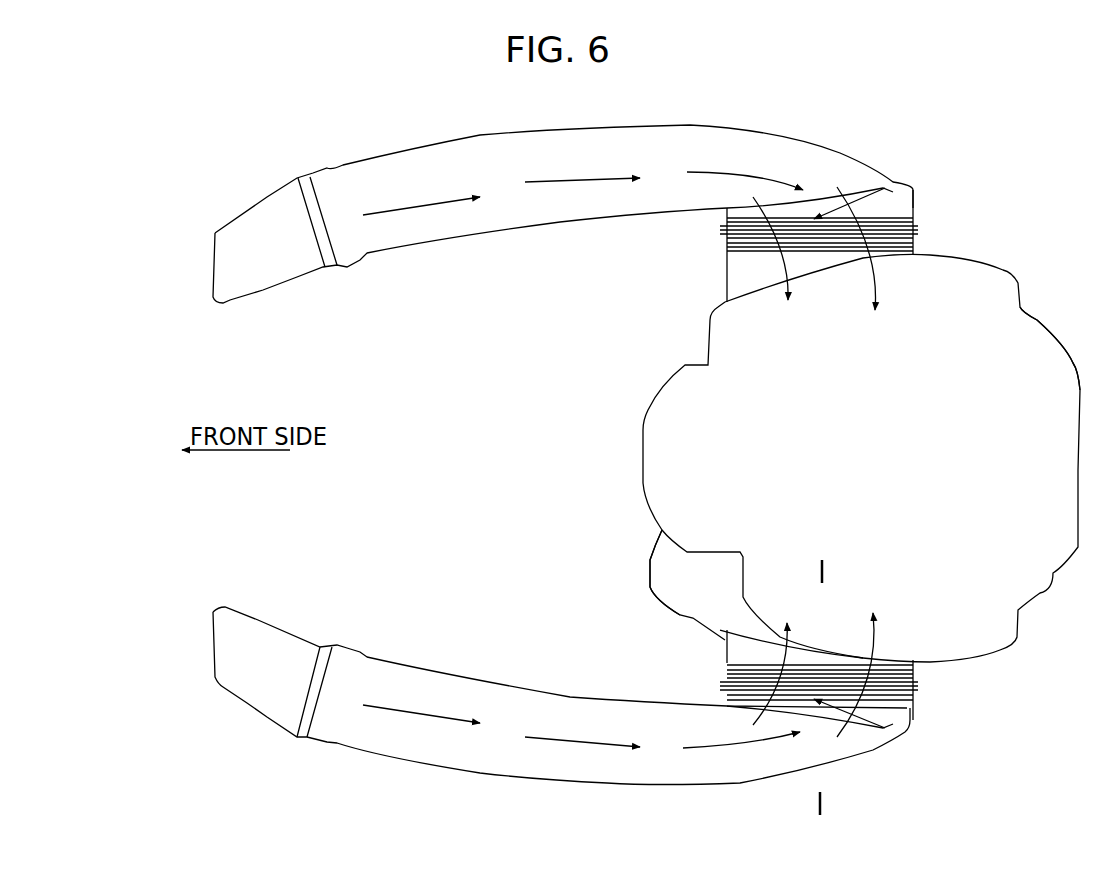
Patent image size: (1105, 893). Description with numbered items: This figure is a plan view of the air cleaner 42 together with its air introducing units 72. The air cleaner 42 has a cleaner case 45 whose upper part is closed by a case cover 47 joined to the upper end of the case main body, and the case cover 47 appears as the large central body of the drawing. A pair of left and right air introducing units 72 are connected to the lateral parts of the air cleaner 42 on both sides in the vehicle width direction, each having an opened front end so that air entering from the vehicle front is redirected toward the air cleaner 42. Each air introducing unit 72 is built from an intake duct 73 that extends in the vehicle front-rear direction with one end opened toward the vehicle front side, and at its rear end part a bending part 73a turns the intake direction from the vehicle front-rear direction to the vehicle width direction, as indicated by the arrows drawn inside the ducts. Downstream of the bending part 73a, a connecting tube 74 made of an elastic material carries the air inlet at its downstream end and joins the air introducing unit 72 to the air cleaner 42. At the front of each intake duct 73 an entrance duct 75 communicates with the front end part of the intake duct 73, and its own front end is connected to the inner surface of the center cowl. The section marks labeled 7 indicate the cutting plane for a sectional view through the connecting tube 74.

The air cleaner 42 is at (972, 255).
The cleaner case 45 is at (643, 600).
The case cover 47 is at (1013, 355).
The air introducing unit 72 is at (690, 125).
The intake duct 73 is at (395, 168).
The bending part 73a is at (857, 168).
The connecting tube 74 is at (737, 272).
The entrance duct 75 is at (265, 222).
The section line 7 is at (818, 565).